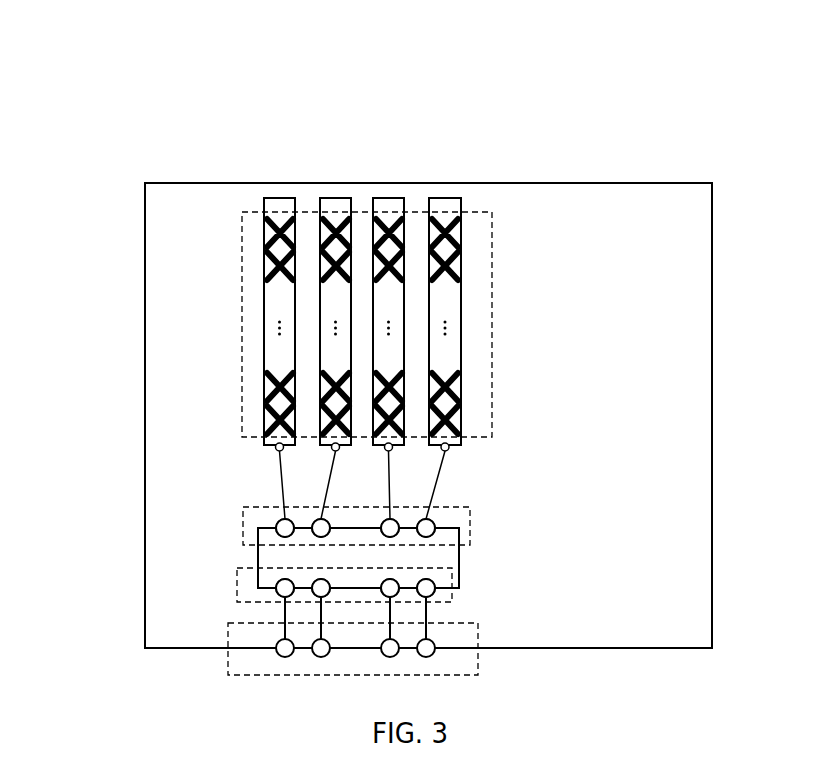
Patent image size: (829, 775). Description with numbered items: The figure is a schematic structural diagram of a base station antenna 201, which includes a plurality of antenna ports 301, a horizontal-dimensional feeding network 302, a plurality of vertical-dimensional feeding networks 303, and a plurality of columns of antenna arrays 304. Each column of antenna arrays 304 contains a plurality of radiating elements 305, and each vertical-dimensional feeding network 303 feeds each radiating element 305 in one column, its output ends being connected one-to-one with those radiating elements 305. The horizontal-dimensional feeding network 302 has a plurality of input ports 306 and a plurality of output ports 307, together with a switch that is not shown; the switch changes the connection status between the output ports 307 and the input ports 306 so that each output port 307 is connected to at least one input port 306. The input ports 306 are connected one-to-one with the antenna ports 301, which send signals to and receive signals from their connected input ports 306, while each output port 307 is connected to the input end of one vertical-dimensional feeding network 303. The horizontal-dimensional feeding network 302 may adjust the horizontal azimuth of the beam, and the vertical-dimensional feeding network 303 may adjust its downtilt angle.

The base station antenna 201 is at (560, 183).
The vertical-dimensional feeding network 303 is at (440, 198).
The column of antenna arrays 304 is at (493, 226).
The radiating element 305 is at (460, 280).
The output port 307 is at (514, 512).
The horizontal-dimensional feeding network 302 is at (459, 562).
The input port 306 is at (237, 571).
The antenna port 301 is at (478, 631).